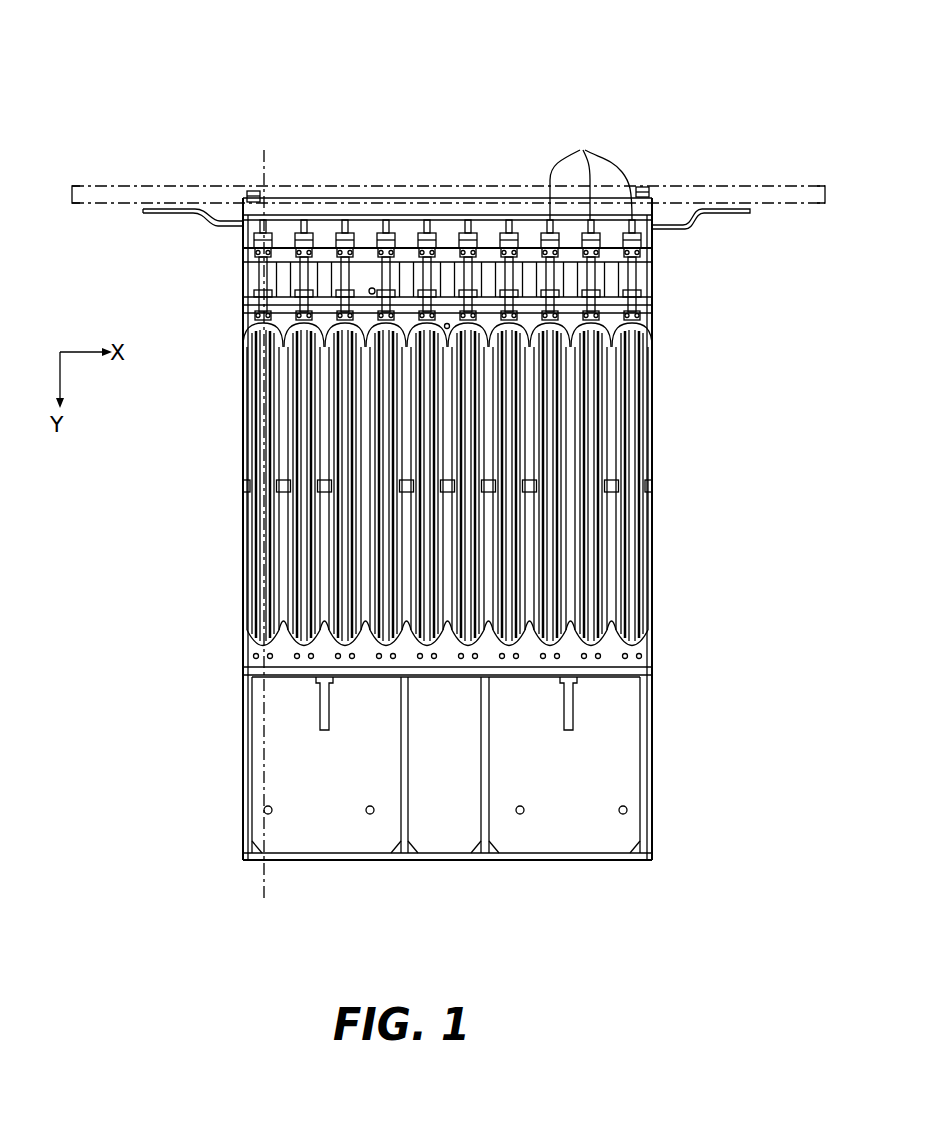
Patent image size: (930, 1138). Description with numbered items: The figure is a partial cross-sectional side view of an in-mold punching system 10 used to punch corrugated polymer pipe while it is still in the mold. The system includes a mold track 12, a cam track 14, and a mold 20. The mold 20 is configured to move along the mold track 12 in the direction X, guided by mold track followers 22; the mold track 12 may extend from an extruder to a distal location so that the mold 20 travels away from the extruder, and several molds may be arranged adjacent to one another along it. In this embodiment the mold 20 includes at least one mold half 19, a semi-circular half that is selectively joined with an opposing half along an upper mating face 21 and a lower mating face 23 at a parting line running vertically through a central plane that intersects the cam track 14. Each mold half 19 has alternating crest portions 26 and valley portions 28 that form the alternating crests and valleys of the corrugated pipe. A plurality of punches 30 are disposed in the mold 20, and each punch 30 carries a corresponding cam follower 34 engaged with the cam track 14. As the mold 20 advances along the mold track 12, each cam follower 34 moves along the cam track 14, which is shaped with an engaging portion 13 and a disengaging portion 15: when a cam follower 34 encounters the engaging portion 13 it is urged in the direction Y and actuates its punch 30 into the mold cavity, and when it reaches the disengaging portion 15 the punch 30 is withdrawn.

The in-mold punching system 10 is at (191, 127).
The mold track 12 is at (121, 187).
The engaging portion 13 is at (201, 221).
The cam track 14 is at (150, 213).
The disengaging portion 15 is at (686, 229).
The mold half 19 is at (243, 528).
The mold 20 is at (181, 517).
The upper mating face 21 is at (285, 340).
The mold track followers 22 is at (254, 191).
The lower mating face 23 is at (283, 630).
The crest portions 26 is at (550, 428).
The valley portions 28 is at (568, 627).
The punches 30 is at (550, 285).
The cam follower 34 is at (591, 172).